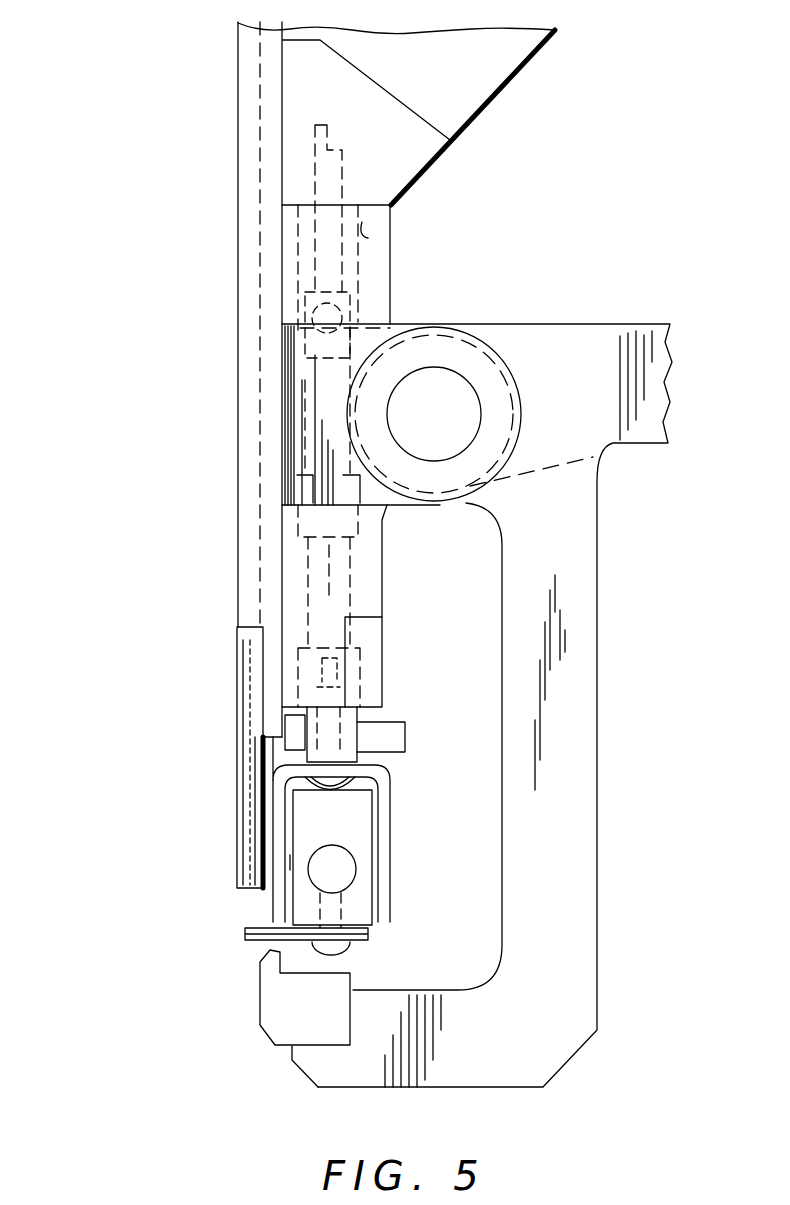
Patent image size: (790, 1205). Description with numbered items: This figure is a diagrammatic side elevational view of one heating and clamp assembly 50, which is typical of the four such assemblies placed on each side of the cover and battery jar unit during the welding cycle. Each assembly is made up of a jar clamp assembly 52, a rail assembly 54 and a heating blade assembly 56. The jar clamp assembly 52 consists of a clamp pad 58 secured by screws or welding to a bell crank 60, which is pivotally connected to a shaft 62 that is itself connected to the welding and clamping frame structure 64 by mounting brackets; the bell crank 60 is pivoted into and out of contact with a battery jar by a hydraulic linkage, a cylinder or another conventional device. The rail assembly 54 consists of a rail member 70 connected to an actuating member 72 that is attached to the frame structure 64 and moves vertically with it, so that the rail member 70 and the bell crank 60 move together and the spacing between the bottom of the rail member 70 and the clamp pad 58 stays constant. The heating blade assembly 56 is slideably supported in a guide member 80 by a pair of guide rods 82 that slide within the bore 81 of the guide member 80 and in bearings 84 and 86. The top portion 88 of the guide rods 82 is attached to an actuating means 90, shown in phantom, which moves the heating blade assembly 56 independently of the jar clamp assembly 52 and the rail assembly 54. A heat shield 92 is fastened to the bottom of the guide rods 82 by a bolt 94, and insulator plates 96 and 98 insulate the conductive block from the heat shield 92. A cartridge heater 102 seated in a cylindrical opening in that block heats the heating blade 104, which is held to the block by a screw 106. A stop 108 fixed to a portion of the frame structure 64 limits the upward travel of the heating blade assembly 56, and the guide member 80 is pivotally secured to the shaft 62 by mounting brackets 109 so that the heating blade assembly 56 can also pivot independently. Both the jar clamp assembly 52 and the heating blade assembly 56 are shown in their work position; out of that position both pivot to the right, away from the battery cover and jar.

The heating and clamp assembly 50 is at (222, 588).
The jar clamp assembly 52 is at (294, 1072).
The rail assembly 54 is at (234, 726).
The heating blade assembly 56 is at (394, 662).
The clamp pad 58 is at (278, 1013).
The bell crank 60 is at (556, 1038).
The shaft 62 is at (445, 417).
The welding and clamping frame structure 64 is at (510, 63).
The rail member 70 is at (247, 790).
The actuating member 72 is at (247, 367).
The guide member 80 is at (372, 560).
The bore 81 is at (368, 230).
The guide rods 82 is at (337, 607).
The bearing 84 is at (298, 518).
The bearing 86 is at (300, 672).
The top portion of guide rods 88 is at (328, 283).
The actuating means 90 is at (330, 127).
The heat shield 92 is at (388, 820).
The bolt 94 is at (367, 783).
The insulator plate 96 is at (377, 865).
The insulator plate 98 is at (290, 858).
The cartridge heater 102 is at (342, 872).
The heating blade 104 is at (245, 934).
The screw 106 is at (350, 952).
The stop 108 is at (405, 722).
The mounting brackets 109 is at (452, 358).